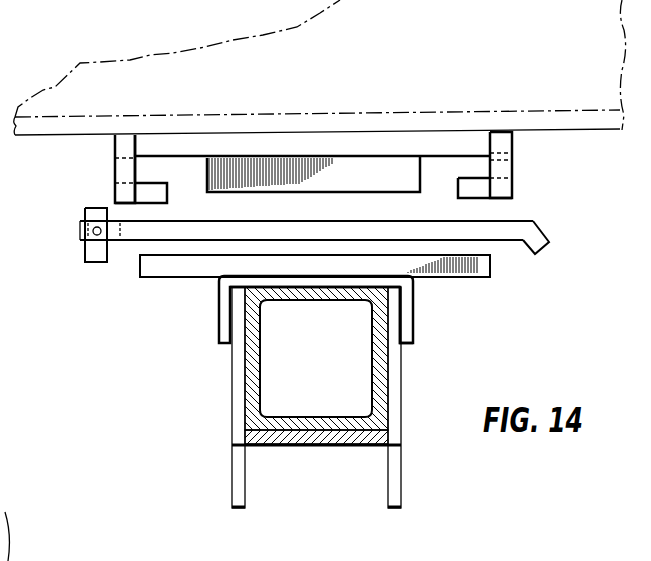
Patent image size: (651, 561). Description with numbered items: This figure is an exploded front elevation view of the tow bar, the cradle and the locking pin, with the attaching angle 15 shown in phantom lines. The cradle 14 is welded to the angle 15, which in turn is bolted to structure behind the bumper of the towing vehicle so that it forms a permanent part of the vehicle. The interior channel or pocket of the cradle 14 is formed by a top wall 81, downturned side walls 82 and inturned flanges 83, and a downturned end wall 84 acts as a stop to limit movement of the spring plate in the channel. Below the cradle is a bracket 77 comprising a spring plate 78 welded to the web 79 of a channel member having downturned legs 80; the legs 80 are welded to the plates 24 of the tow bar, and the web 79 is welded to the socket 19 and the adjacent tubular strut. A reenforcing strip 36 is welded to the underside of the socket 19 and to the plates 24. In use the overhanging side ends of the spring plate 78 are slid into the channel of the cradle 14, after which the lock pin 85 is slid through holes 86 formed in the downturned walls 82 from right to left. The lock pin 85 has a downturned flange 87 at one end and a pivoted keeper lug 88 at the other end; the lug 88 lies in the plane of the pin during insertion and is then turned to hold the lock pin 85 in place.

The cradle 14 is at (513, 146).
The angle 15 is at (604, 38).
The socket 19 is at (120, 6).
The plates 24 is at (401, 377).
The reenforcing strip 36 is at (323, 443).
The bracket 77 is at (213, 283).
The spring plate 78 is at (480, 274).
The web 79 is at (302, 284).
The downturned legs 80 is at (413, 322).
The top wall 81 is at (394, 133).
The downturned side walls 82 is at (115, 143).
The inturned flanges 83 is at (167, 196).
The downturned end wall 84 is at (371, 180).
The lock pin 85 is at (138, 241).
The holes 86 is at (490, 165).
The downturned flange 87 is at (542, 235).
The pivoted keeper lug 88 is at (85, 255).